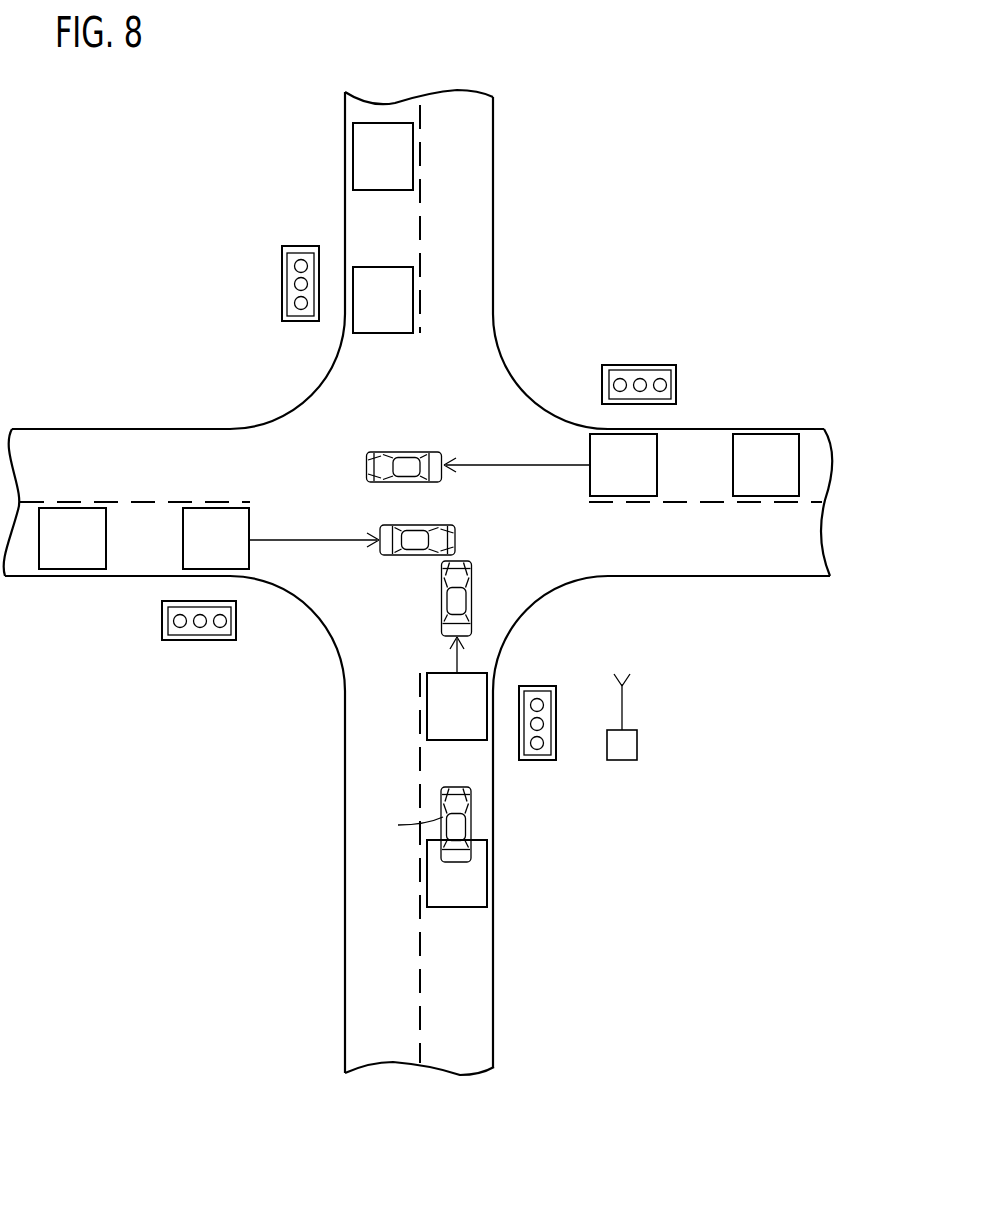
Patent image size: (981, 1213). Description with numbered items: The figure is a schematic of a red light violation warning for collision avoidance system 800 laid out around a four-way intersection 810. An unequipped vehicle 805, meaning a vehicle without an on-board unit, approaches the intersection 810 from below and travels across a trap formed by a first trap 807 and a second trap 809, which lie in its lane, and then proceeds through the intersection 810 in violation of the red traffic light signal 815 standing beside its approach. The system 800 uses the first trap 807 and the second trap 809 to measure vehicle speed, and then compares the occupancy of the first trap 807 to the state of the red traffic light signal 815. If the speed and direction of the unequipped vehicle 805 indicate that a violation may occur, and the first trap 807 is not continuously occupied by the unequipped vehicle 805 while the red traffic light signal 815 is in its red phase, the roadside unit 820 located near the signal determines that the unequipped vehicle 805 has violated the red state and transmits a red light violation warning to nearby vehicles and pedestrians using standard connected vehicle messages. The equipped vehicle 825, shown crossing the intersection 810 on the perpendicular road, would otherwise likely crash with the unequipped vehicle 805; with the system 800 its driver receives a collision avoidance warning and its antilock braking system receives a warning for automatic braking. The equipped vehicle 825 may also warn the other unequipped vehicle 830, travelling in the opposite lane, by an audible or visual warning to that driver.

The red light violation warning for collision avoidance system 800 is at (664, 121).
The intersection 810 is at (482, 375).
The unequipped vehicle V4 830 is at (405, 452).
The OBU equipped vehicle V3 825 is at (400, 557).
The unequipped vehicle V1 805 is at (442, 607).
The trap M1 807 is at (457, 741).
The trap M2 809 is at (457, 908).
The red traffic light signal S1 815 is at (538, 761).
The RSU 820 is at (638, 745).